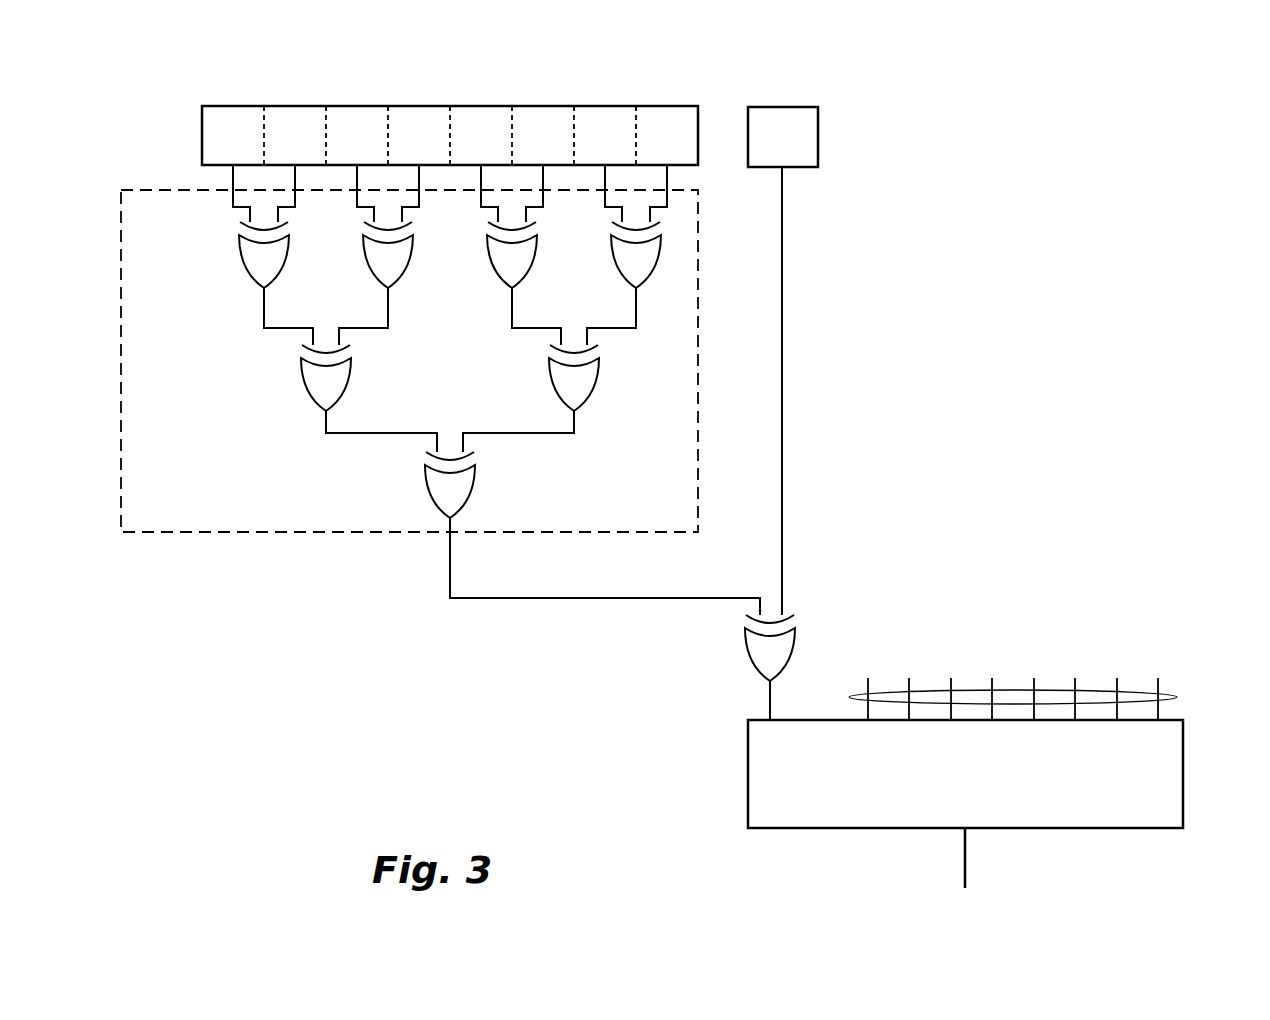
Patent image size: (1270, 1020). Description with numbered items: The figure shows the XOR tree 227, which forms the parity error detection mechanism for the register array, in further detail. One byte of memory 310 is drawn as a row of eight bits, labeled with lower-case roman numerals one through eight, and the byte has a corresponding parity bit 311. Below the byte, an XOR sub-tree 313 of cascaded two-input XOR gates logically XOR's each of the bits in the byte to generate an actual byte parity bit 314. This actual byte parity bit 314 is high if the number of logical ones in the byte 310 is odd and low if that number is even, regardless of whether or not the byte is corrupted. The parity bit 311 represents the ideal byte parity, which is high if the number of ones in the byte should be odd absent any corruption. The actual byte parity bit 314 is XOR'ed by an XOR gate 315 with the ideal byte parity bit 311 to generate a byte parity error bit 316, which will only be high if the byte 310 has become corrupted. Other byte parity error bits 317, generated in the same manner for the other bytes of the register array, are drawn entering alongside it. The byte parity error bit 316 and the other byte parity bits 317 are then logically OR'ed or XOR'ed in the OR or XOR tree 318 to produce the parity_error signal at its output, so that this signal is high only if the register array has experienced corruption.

The XOR tree 227 is at (1015, 208).
The byte of memory 310 is at (202, 123).
The parity bit 311 is at (783, 478).
The XOR sub-tree 313 is at (409, 348).
The actual byte parity bit 314 is at (450, 546).
The XOR gate 315 is at (787, 645).
The byte parity error bit 316 is at (770, 697).
The other byte parity error bits 317 is at (1220, 672).
The OR or XOR tree 318 is at (930, 872).